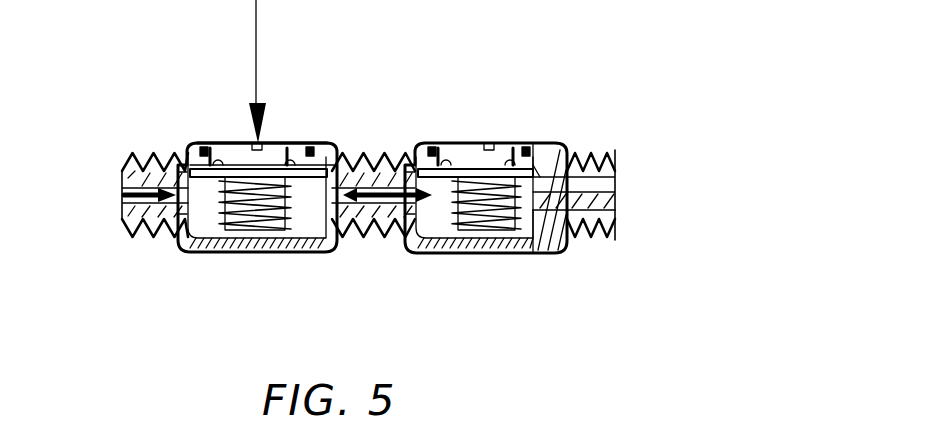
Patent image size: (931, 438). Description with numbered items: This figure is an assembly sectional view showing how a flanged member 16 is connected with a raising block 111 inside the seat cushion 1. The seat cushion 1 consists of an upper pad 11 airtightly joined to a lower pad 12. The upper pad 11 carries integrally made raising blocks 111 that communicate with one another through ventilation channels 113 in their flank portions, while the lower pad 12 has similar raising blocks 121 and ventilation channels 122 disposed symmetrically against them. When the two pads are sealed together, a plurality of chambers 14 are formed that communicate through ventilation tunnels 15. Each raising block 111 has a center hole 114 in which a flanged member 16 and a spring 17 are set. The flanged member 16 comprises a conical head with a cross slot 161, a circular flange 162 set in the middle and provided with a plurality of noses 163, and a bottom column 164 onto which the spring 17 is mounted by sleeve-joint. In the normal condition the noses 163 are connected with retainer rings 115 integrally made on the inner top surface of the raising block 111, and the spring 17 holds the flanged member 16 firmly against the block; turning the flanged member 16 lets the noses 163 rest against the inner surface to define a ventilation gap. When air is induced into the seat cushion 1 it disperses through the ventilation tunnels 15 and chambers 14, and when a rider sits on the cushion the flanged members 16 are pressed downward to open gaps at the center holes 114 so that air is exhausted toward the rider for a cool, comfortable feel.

The seat cushion 1 is at (548, 143).
The upper pad 11 is at (605, 183).
The lower pad 12 is at (597, 203).
The chamber 14 is at (207, 248).
The ventilation tunnel 15 is at (110, 148).
The flanged member 16 is at (278, 143).
The spring 17 is at (290, 248).
The raising block 111 is at (333, 147).
The ventilation channel 113 is at (132, 150).
The center hole 114 is at (223, 143).
The retainer ring 115 is at (210, 143).
The raising block 121 is at (267, 248).
The ventilation channel 122 is at (143, 247).
The cross slot 161 is at (252, 143).
The circular flange 162 is at (295, 143).
The nose 163 is at (200, 150).
The bottom column 164 is at (242, 248).